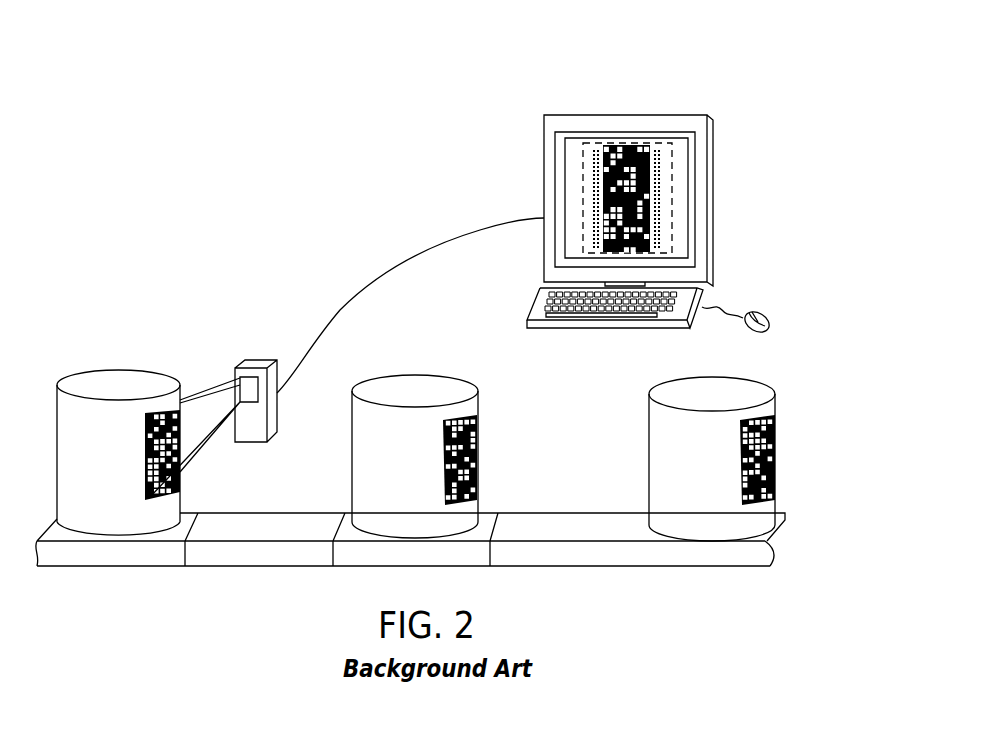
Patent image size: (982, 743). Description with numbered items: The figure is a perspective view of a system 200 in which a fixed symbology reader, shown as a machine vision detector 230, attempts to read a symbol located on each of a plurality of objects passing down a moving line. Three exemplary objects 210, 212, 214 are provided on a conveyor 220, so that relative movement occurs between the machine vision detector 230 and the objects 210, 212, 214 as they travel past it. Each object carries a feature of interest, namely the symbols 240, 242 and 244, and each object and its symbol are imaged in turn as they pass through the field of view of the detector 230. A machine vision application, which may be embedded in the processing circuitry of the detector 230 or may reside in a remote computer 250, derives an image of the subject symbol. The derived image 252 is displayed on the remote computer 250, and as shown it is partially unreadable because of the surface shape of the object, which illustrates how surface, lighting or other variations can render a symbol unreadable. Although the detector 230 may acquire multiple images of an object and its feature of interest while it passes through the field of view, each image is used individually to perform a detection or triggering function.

The system 200 is at (642, 74).
The object 210 is at (133, 380).
The object 212 is at (422, 380).
The object 214 is at (720, 382).
The conveyor 220 is at (258, 565).
The machine vision detector 230 is at (266, 362).
The symbol 240 is at (191, 482).
The symbol 242 is at (487, 457).
The symbol 244 is at (790, 450).
The remote computer 250 is at (742, 202).
The derived image 252 is at (684, 160).